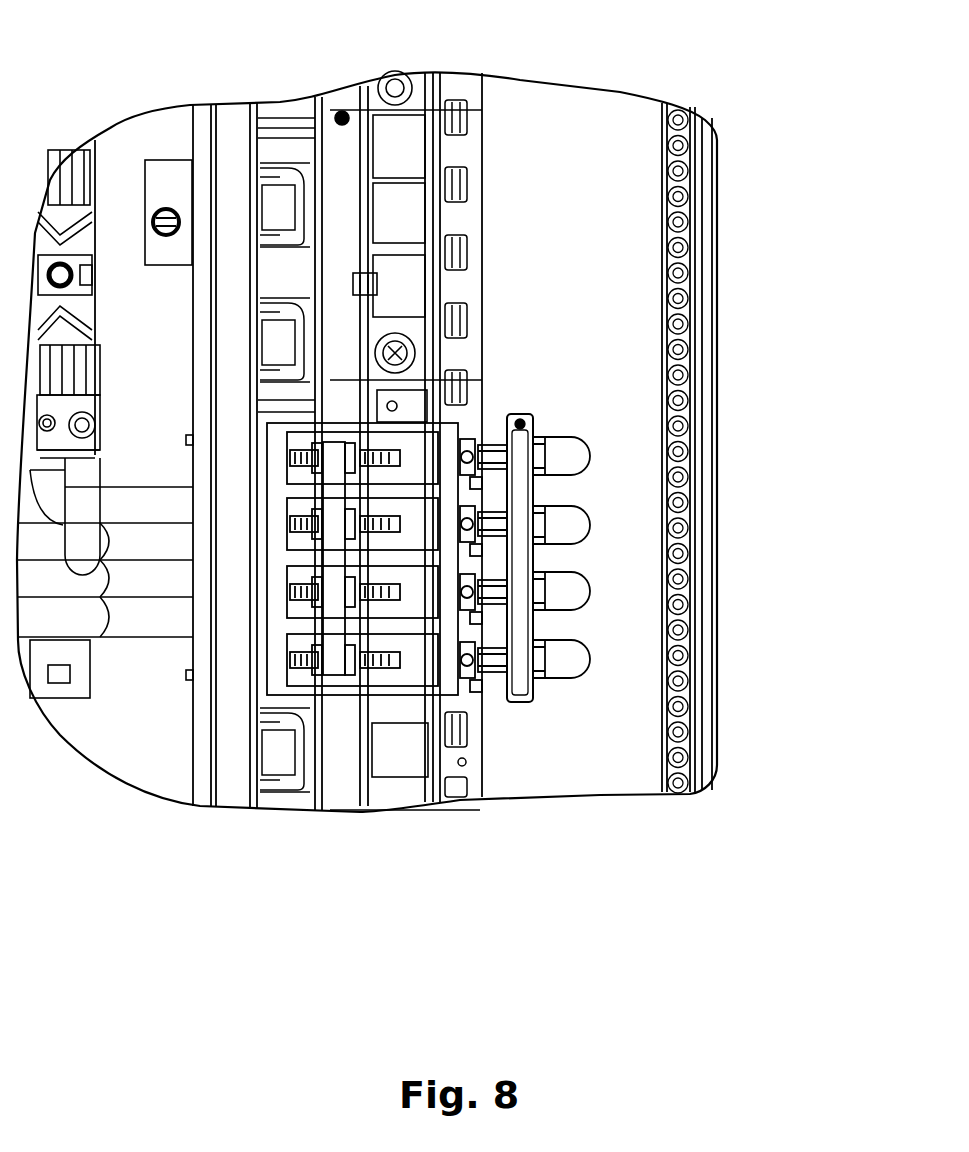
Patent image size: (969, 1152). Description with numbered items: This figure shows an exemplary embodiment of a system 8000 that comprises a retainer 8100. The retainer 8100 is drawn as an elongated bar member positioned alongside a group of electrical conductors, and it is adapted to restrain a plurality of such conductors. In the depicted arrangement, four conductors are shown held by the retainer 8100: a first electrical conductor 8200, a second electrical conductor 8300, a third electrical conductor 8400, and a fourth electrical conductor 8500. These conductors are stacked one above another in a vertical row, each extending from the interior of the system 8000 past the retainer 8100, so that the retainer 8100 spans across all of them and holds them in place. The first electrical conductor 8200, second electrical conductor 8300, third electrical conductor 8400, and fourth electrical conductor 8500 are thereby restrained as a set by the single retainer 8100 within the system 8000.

The system 8000 is at (256, 42).
The retainer 8100 is at (535, 705).
The first electrical conductor 8200 is at (592, 438).
The second electrical conductor 8300 is at (594, 510).
The third electrical conductor 8400 is at (596, 579).
The fourth electrical conductor 8500 is at (599, 649).